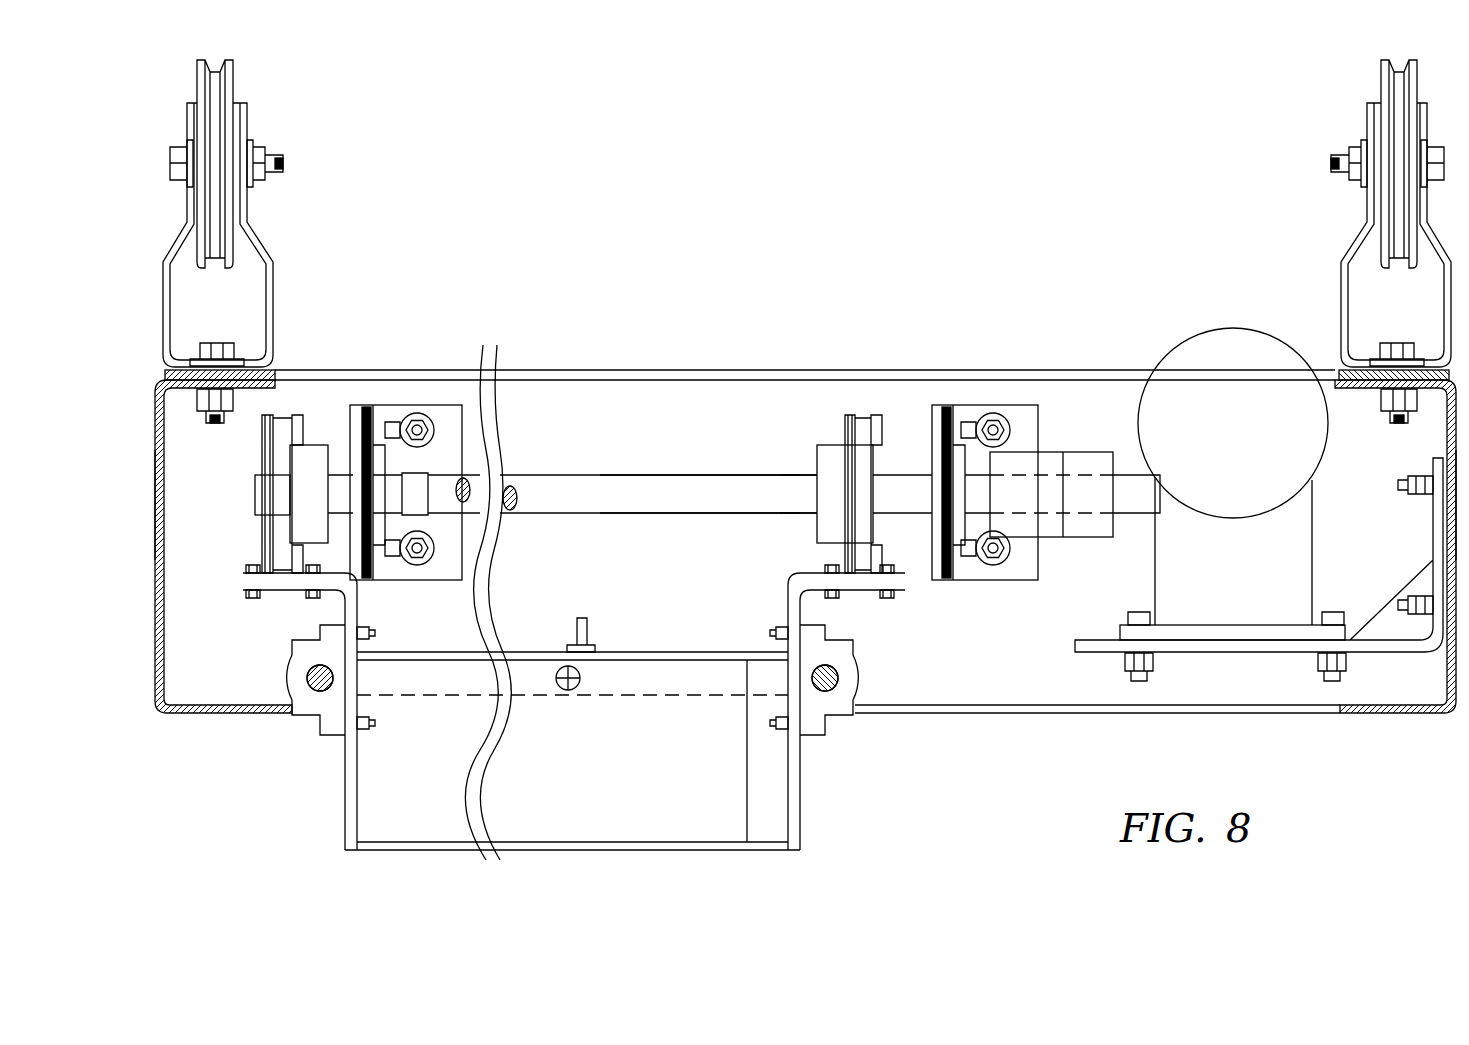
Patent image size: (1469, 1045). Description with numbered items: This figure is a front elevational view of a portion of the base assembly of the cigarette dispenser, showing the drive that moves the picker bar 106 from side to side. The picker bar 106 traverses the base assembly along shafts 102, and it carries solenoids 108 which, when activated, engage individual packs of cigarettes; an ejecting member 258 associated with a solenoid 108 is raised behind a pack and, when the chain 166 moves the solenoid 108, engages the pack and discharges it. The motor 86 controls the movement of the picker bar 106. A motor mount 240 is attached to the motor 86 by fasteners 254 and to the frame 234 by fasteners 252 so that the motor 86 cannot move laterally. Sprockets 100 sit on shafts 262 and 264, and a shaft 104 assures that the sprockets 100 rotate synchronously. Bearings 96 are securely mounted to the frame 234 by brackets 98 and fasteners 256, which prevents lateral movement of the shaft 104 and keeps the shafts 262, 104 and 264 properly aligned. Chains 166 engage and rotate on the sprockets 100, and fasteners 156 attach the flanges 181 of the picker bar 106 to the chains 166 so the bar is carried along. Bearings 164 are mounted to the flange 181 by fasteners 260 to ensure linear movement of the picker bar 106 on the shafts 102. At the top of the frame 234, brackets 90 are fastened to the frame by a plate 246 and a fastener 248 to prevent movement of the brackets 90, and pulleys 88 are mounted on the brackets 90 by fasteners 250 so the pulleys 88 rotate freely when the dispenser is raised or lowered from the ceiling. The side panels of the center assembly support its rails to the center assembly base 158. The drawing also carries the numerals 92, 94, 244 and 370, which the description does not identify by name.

The motor 86 is at (1205, 350).
The pulleys 88 is at (216, 90).
The brackets 90 is at (265, 250).
The motor shaft 92 is at (1133, 505).
The coupling hub 94 is at (1078, 460).
The bearings 96 is at (410, 420).
The brackets 98 is at (450, 410).
The sprockets 100 is at (305, 465).
The shafts 102 is at (320, 690).
The shaft 104 is at (500, 512).
The picker bar 106 is at (520, 840).
The solenoids 108 is at (590, 645).
The fasteners 156 is at (312, 590).
The center assembly base 158 is at (150, 530).
The bearings 164 is at (310, 651).
The chains 166 is at (280, 420).
The flanges 181 is at (250, 575).
The frame 234 is at (158, 452).
The motor mount 240 is at (1433, 518).
The vertical plate 244 is at (350, 820).
The plate 246 is at (250, 385).
The fastener 248 is at (215, 345).
The fasteners 250 is at (258, 152).
The fasteners 252 is at (1405, 485).
The fasteners 254 is at (1128, 615).
The fasteners 256 is at (420, 440).
The ejecting member 258 is at (585, 625).
The fasteners 260 is at (368, 632).
The shaft 262 is at (905, 470).
The shaft 264 is at (450, 468).
The shaft end 370 is at (262, 497).